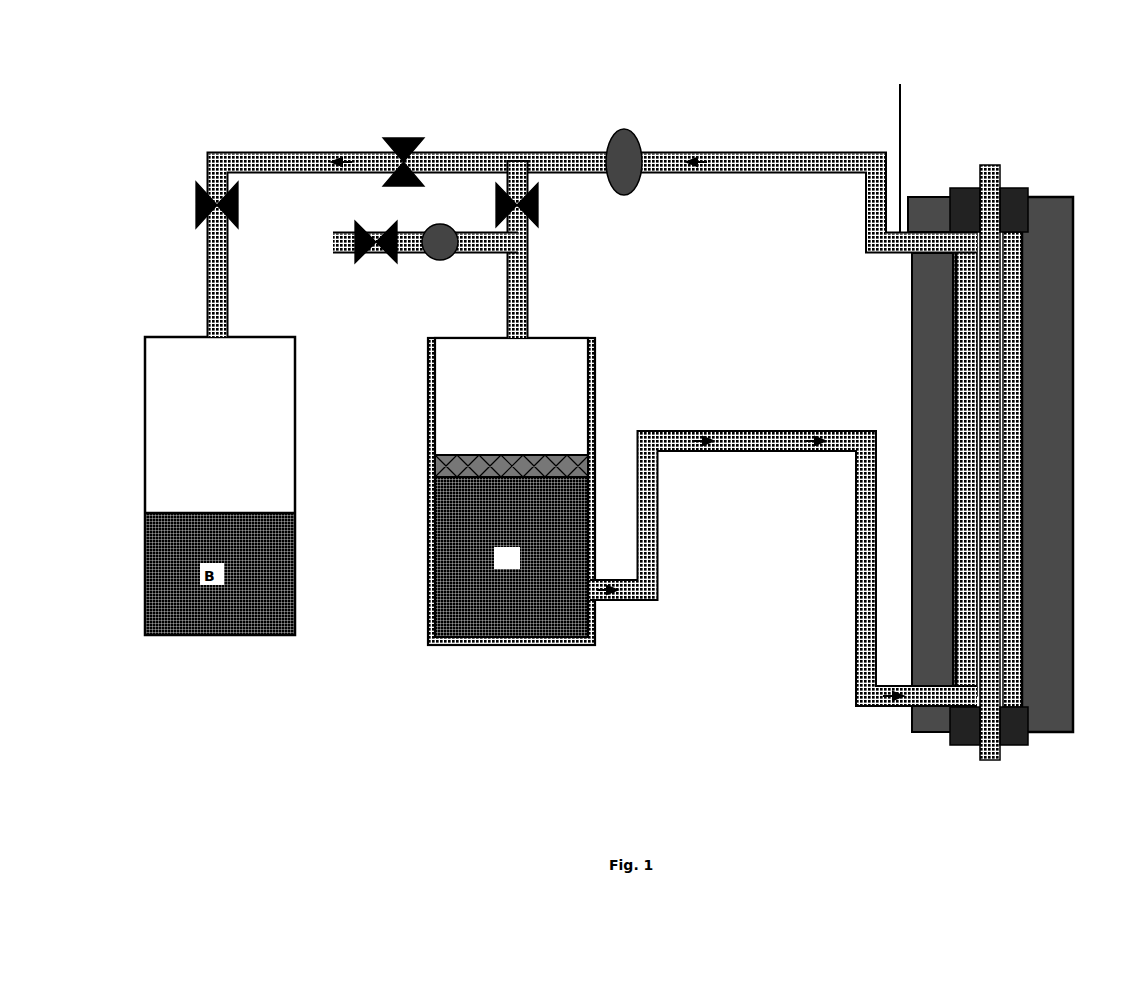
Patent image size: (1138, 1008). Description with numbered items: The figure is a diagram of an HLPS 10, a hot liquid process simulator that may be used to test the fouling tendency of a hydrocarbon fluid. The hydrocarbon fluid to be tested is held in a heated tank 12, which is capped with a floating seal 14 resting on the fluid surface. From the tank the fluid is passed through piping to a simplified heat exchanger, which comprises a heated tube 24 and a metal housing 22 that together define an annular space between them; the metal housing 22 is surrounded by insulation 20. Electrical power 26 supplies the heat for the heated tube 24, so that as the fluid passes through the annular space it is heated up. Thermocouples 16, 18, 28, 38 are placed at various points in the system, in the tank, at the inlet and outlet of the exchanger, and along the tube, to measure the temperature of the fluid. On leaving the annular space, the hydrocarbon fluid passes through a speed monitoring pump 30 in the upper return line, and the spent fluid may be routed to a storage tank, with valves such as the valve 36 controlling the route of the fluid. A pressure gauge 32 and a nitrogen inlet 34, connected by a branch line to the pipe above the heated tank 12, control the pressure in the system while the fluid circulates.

The HLPS 10 is at (265, 60).
The heated tank 12 is at (456, 491).
The floating seal 14 is at (426, 465).
The thermocouple 16 is at (458, 619).
The thermocouple 18 is at (903, 697).
The insulation 20 is at (998, 413).
The metal housing 22 is at (1042, 487).
The heated tube 24 is at (980, 347).
The electrical power 26 is at (991, 758).
The thermocouple 28 is at (904, 154).
The speed monitoring pump 30 is at (624, 112).
The pressure gauge 32 is at (441, 215).
The nitrogen inlet 34 is at (325, 240).
The valve 36 is at (186, 205).
The thermocouple 38 is at (990, 255).